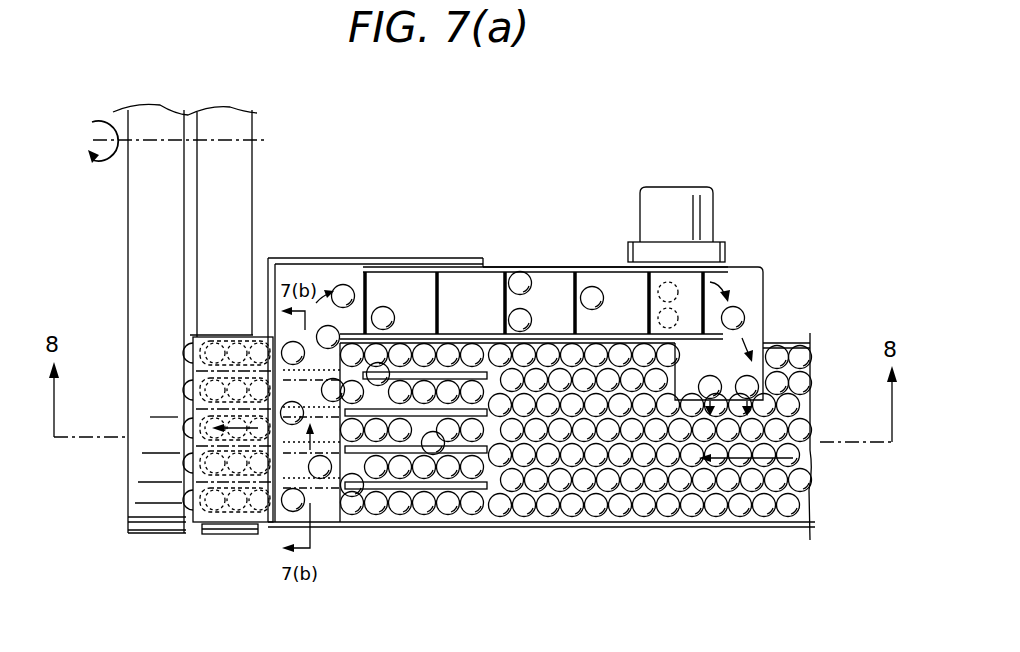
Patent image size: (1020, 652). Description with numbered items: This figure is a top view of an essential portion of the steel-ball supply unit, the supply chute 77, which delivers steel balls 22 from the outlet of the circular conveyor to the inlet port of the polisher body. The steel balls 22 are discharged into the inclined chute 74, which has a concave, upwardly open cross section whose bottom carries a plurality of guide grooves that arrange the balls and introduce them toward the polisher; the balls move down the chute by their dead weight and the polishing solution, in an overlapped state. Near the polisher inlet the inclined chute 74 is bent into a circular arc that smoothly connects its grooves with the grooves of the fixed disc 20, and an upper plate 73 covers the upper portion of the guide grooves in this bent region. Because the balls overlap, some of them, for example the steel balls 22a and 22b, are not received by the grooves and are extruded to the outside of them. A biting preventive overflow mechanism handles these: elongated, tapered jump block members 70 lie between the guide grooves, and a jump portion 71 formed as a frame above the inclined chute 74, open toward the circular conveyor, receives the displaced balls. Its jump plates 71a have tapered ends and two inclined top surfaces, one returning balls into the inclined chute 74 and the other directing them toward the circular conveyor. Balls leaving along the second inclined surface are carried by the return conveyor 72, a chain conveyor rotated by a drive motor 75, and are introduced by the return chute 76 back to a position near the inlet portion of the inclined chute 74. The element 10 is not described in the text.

The rotary shaft 10 is at (128, 186).
The fixed disc 20 is at (253, 193).
The steel balls 22 is at (690, 514).
The steel ball 22a is at (335, 462).
The steel ball 22b is at (430, 452).
The jump block member 70 is at (388, 489).
The jump portion 71 is at (337, 256).
The jump plate 71a is at (323, 504).
The return conveyor 72 is at (548, 270).
The upper plate 73 is at (252, 525).
The inclined chute 74 is at (468, 527).
The drive motor 75 is at (688, 187).
The return chute 76 is at (741, 267).
The supply chute 77 is at (508, 210).